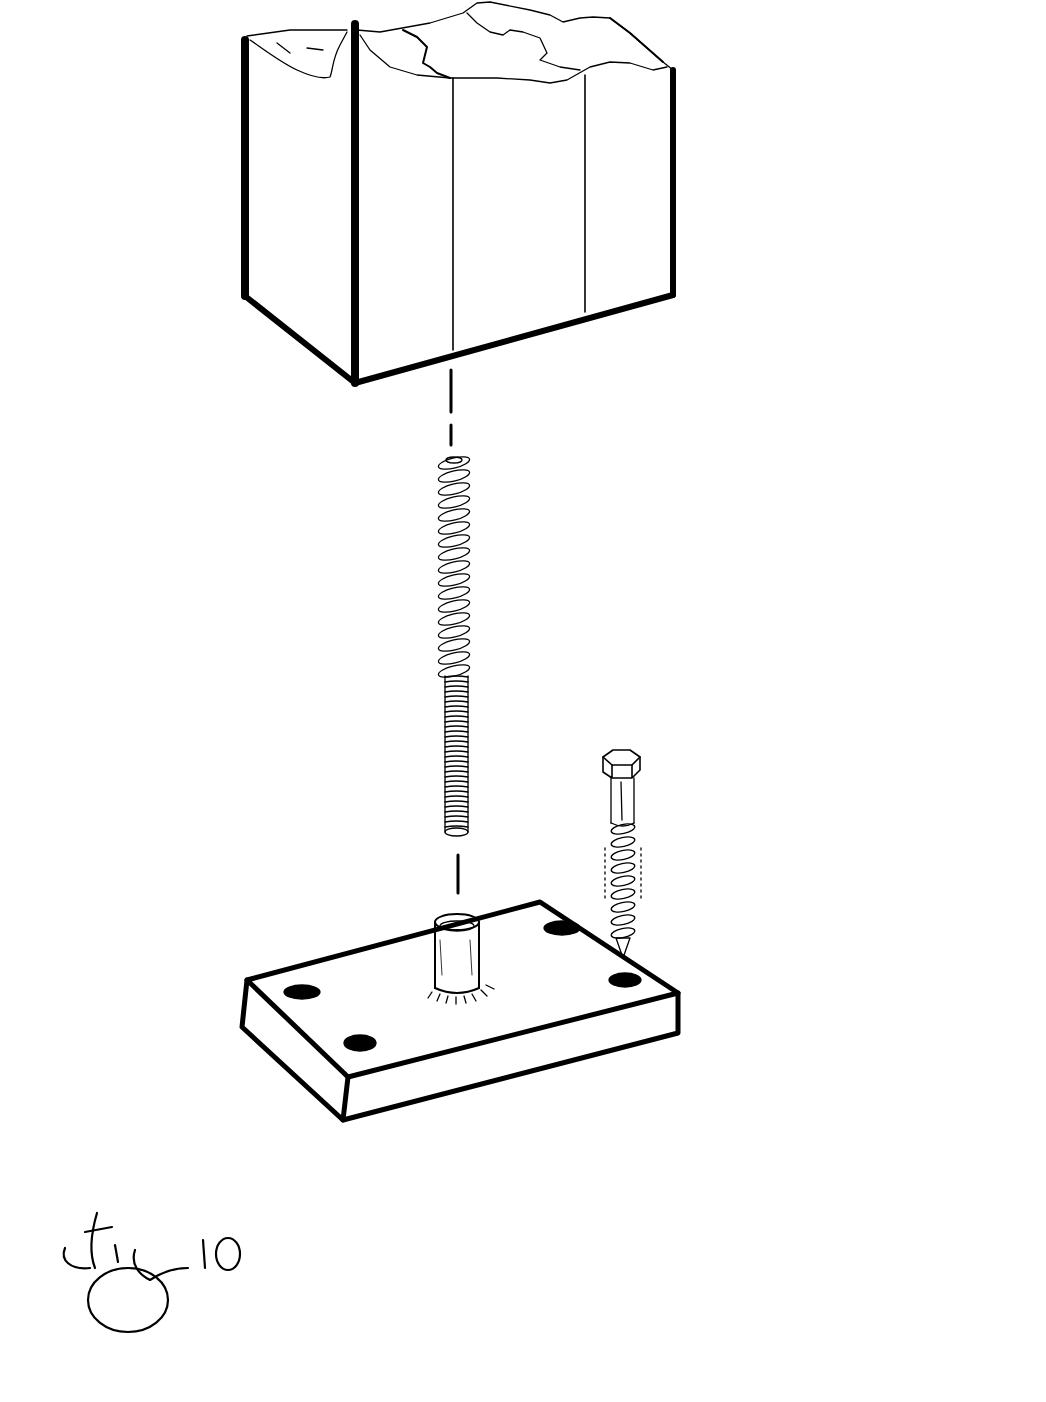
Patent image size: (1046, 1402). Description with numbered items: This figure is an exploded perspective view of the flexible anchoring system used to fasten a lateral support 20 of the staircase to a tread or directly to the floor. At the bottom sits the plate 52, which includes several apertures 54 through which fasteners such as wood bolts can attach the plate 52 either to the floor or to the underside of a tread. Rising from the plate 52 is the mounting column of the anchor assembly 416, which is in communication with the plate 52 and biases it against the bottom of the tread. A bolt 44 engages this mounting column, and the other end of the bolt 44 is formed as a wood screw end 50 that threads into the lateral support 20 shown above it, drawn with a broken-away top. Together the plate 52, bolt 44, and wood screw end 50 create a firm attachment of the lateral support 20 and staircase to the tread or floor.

The lateral support 20 is at (667, 240).
The wood screw end 50 is at (458, 560).
The bolt 44 is at (463, 760).
The base mounting assembly 416 is at (430, 942).
The plate 52 is at (685, 1027).
The mounting holes 54 is at (561, 902).